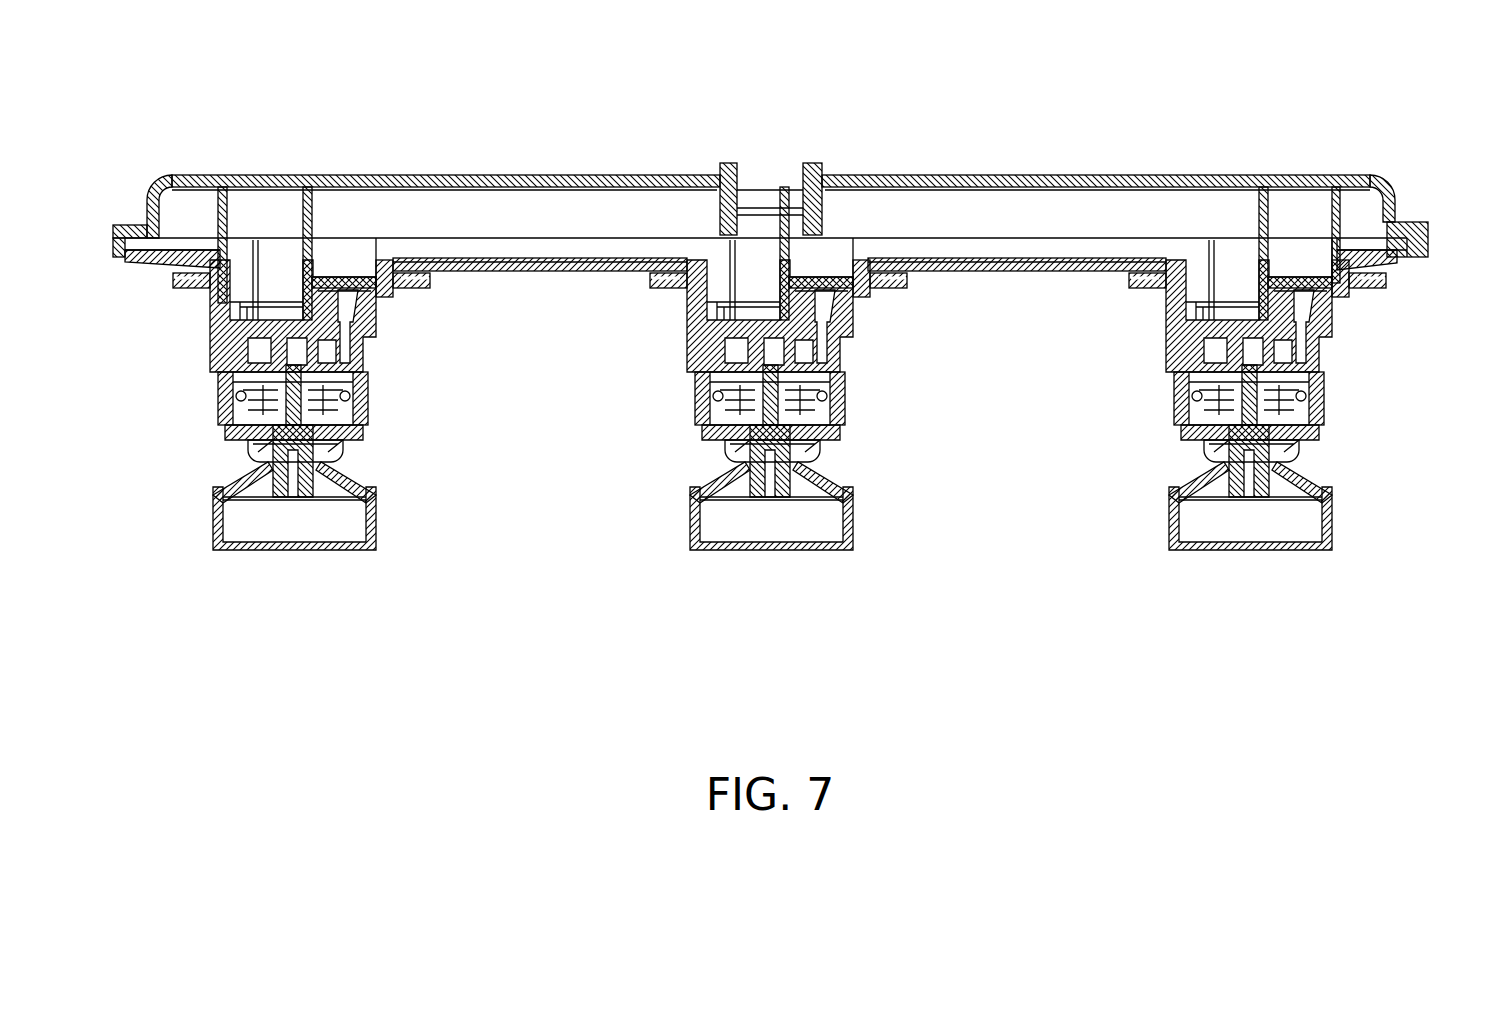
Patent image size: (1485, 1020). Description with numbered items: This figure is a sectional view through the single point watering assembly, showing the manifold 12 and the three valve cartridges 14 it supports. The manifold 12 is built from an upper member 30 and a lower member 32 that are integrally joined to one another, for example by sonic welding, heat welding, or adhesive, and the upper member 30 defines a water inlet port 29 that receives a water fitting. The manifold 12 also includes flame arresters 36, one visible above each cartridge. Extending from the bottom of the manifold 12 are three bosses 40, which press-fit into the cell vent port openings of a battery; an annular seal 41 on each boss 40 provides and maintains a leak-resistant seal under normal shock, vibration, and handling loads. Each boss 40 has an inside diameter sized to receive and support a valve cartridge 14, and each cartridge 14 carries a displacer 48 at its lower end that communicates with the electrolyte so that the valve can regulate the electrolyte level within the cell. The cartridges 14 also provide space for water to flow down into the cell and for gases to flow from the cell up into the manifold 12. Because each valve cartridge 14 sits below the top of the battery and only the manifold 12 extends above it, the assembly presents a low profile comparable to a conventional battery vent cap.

The manifold 12 is at (1053, 156).
The valve cartridge 14 is at (203, 461).
The water inlet port 29 is at (740, 190).
The upper member 30 is at (1250, 178).
The lower member 32 is at (1408, 262).
The flame arrester 36 is at (348, 278).
The boss 40 is at (210, 343).
The annular seal 41 is at (407, 288).
The displacer 48 is at (232, 530).